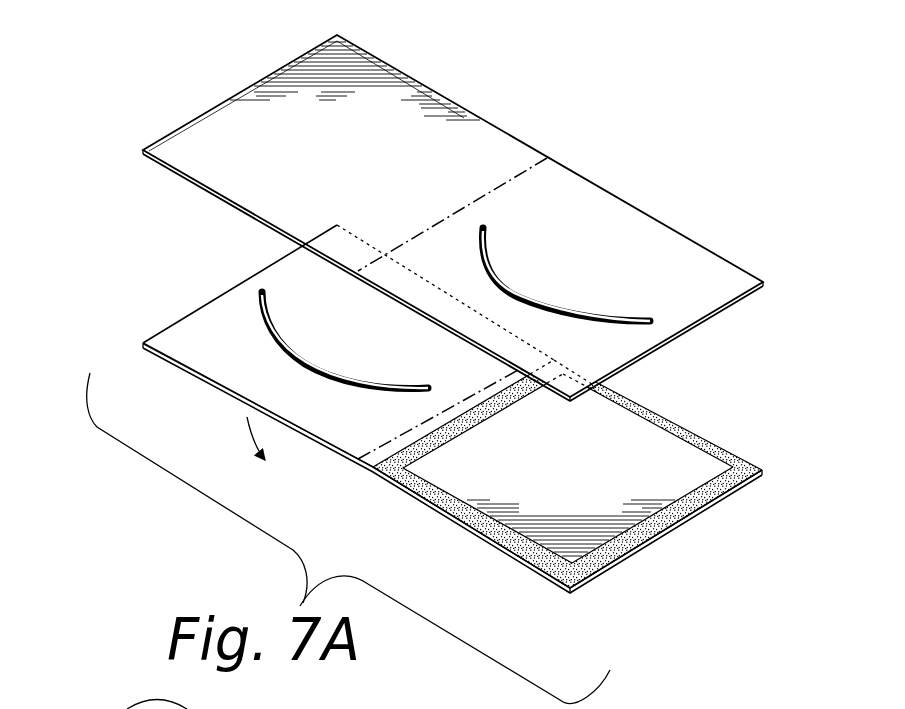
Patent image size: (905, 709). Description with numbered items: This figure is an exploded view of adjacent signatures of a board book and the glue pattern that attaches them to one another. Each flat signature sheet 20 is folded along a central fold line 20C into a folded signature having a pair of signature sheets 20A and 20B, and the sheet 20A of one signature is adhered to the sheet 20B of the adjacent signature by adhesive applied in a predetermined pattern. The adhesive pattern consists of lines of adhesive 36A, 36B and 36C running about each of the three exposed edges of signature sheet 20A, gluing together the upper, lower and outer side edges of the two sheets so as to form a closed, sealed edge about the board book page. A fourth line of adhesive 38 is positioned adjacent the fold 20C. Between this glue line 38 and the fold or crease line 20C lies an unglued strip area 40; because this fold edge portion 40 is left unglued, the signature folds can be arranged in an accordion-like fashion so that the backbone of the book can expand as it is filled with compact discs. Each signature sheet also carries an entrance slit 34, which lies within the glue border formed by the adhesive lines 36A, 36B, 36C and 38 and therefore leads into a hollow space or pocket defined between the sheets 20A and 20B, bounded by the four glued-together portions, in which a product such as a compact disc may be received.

The signature sheet 20 is at (371, 480).
The signature sheet 20A is at (567, 487).
The signature sheet 20B is at (252, 348).
The fold line 20C is at (387, 441).
The entrance slit 34 is at (276, 296).
The line of adhesive 36A is at (457, 511).
The line of adhesive 36B is at (665, 533).
The line of adhesive 36C is at (687, 428).
The fourth line of adhesive 38 is at (463, 434).
The unglued strip area 40 is at (462, 402).